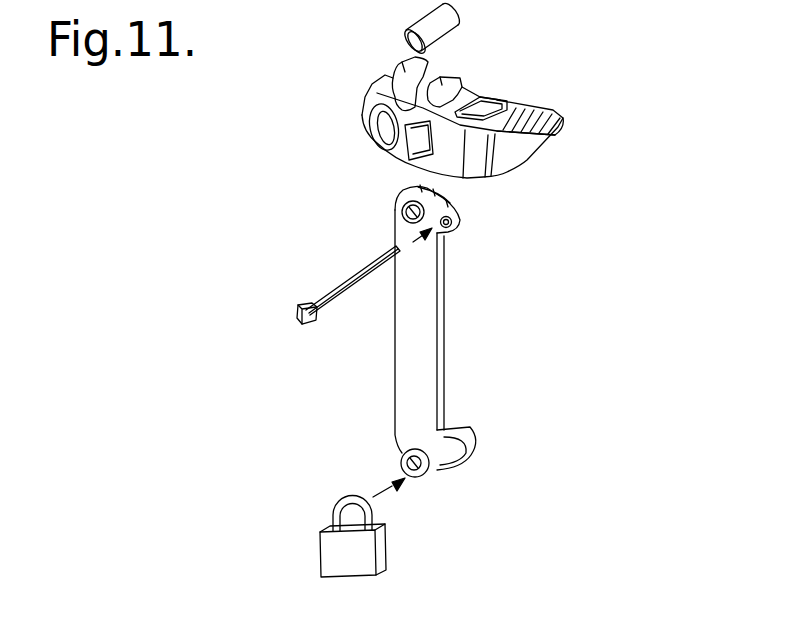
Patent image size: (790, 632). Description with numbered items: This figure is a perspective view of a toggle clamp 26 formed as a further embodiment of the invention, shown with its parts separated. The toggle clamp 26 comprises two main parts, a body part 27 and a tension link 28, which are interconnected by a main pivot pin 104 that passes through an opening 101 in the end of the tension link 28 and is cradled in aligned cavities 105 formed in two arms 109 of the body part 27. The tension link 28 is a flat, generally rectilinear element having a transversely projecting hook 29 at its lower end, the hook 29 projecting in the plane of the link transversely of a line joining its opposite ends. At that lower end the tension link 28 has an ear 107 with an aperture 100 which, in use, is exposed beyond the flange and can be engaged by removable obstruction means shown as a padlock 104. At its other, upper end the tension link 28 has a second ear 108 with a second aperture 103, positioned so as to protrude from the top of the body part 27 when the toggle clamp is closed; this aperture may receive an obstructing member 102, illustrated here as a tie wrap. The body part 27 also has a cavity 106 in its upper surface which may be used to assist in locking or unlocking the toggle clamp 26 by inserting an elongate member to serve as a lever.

The toggle clamp 26 is at (284, 162).
The body part 27 is at (557, 112).
The tension link 28 is at (395, 370).
The hook 29 is at (473, 432).
The aperture 100 is at (428, 467).
The opening 101 is at (397, 204).
The obstructing member 102 is at (343, 278).
The second aperture 103 is at (455, 232).
The main pivot pin 104 is at (458, 18).
The cavities 105 is at (380, 80).
The cavity 106 is at (483, 100).
The ear 107 is at (397, 452).
The second ear 108 is at (460, 215).
The arms 109 is at (382, 93).